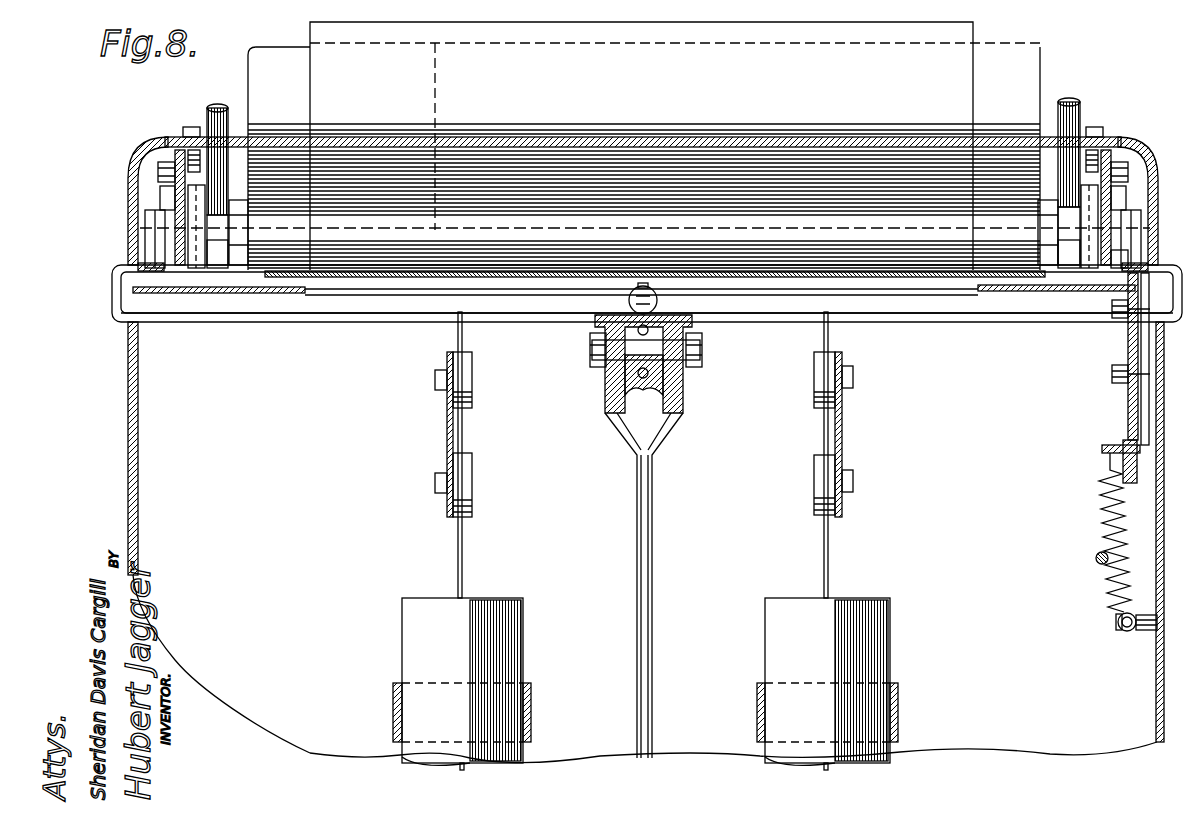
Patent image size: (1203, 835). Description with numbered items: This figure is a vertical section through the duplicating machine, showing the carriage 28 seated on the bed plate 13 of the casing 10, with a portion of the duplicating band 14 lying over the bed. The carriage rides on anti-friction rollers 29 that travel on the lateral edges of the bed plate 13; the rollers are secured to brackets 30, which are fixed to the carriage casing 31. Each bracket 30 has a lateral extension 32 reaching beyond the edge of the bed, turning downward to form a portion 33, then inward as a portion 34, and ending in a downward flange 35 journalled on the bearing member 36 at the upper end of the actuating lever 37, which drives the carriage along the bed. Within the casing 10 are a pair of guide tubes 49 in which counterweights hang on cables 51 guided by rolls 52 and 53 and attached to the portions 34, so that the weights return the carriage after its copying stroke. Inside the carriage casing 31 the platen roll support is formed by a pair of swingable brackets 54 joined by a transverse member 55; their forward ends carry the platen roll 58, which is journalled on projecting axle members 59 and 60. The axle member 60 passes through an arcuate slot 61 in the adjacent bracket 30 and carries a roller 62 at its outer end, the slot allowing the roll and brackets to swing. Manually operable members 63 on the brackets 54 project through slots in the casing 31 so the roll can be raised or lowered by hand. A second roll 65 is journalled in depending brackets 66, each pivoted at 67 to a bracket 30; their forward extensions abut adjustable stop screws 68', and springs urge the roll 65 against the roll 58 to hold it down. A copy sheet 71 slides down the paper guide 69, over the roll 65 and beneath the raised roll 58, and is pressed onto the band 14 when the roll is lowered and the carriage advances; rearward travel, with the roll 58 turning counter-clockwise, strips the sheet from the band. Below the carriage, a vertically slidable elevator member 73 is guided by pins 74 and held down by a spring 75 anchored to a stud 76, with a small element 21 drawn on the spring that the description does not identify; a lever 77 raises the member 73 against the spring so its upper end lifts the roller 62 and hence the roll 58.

The casing 10 is at (128, 368).
The bed plate 13 is at (526, 278).
The duplicating band 14 is at (730, 278).
The eye 21 is at (1096, 557).
The carriage 28 is at (148, 137).
The anti-friction rollers 29 is at (145, 222).
The brackets 30 is at (160, 193).
The carriage casing 31 is at (1146, 152).
The lateral extensions 32 is at (132, 265).
The downward portions 33 is at (112, 298).
The inward portions 34 is at (358, 315).
The downward flanges 35 is at (605, 383).
The bearing member 36 is at (640, 396).
The actuating lever 37 is at (652, 592).
The guide tubes 49 is at (520, 640).
The cables 51 is at (466, 586).
The rolls 52 is at (478, 506).
The rolls 53 is at (472, 400).
The swingable brackets 54 is at (235, 270).
The transverse member 55 is at (258, 222).
The platen roll 58 is at (508, 262).
The axle member 59 is at (213, 270).
The axle member 60 is at (1112, 268).
The arcuate slot 61 is at (1112, 188).
The roller 62 is at (1125, 270).
The manually operable members 63 is at (219, 105).
The second roll 65 is at (200, 270).
The depending brackets 66 is at (193, 198).
The pivot 67 is at (158, 172).
The adjustable stop screws 68' is at (642, 132).
The paper guide 69 is at (289, 56).
The copy sheet 71 is at (975, 46).
The elevator member 73 is at (1128, 410).
The pins 74 is at (1130, 352).
The spring 75 is at (1108, 523).
The stud 76 is at (1117, 624).
The lever 77 is at (1130, 482).